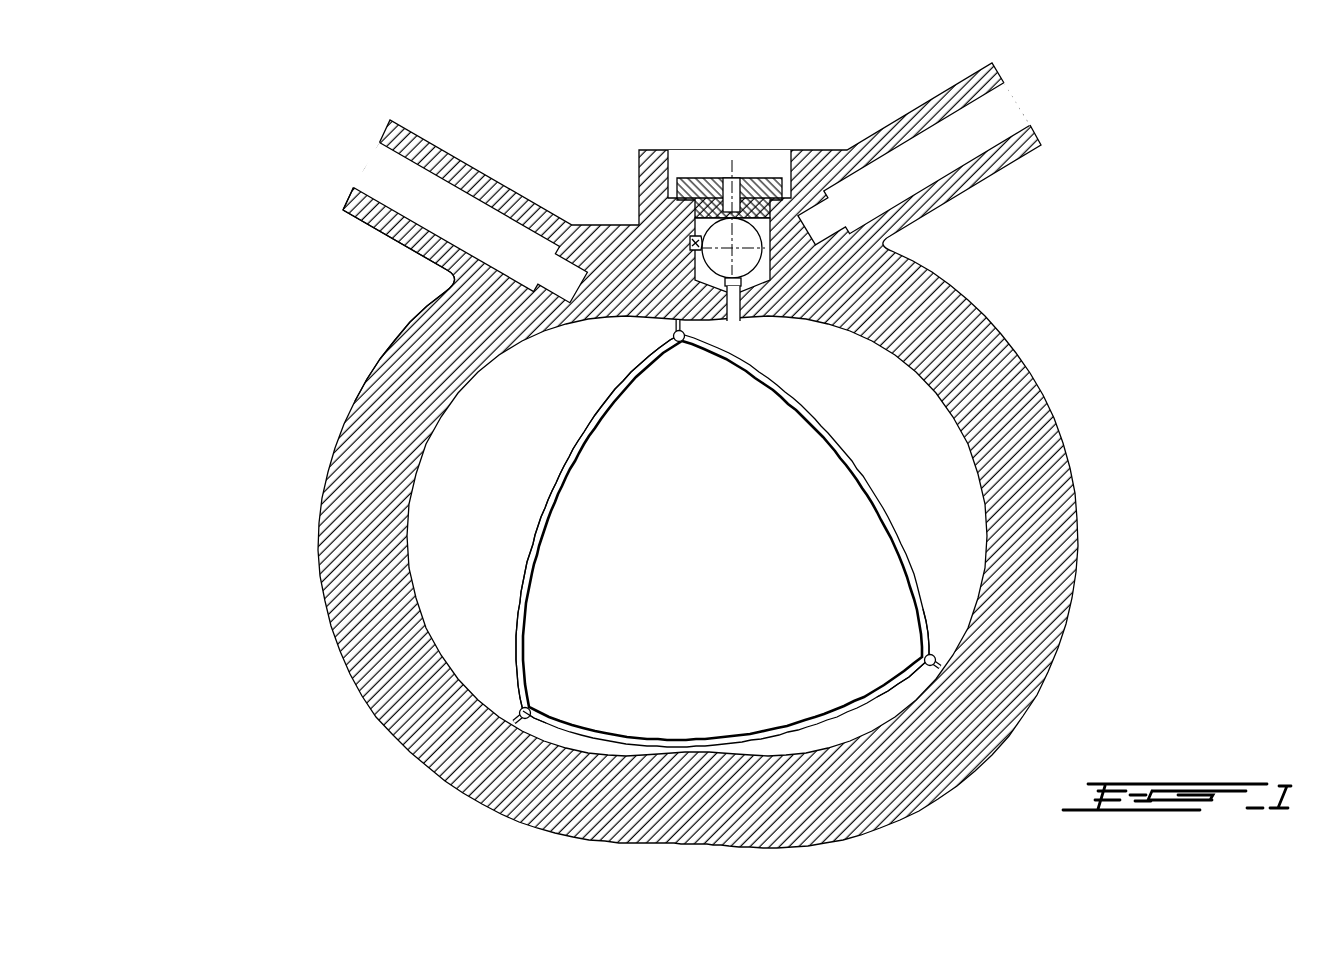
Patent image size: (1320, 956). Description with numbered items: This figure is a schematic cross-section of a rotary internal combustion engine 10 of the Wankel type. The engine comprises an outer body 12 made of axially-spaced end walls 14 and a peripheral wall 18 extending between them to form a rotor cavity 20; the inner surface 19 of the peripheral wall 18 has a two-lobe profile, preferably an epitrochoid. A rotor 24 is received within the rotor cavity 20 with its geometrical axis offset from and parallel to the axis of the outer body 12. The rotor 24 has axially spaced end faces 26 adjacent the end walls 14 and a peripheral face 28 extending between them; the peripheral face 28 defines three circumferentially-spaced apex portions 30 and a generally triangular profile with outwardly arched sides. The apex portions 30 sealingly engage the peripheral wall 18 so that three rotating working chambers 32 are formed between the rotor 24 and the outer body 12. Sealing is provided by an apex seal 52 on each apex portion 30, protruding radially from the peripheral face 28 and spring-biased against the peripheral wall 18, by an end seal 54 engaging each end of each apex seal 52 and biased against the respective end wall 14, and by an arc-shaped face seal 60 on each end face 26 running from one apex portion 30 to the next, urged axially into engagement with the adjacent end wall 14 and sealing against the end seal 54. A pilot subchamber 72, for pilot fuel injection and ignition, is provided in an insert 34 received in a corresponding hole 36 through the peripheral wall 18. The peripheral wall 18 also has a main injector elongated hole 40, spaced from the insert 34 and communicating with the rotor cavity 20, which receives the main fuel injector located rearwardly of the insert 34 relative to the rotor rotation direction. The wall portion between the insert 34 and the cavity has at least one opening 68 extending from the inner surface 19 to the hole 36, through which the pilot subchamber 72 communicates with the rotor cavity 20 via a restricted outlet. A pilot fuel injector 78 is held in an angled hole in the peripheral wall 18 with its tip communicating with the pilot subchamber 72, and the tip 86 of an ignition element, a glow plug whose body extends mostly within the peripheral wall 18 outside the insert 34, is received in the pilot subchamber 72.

The rotary internal combustion engine 10 is at (638, 442).
The outer body 12 is at (700, 442).
The end walls 14 is at (920, 465).
The peripheral wall 18 is at (375, 520).
The inner surface 19 is at (443, 418).
The rotor cavity 20 is at (707, 571).
The rotor 24 is at (937, 588).
The end faces 26 is at (860, 643).
The peripheral face 28 is at (518, 602).
The apex portions 30 is at (956, 680).
The working chambers 32 is at (461, 480).
The insert 34 is at (802, 201).
The hole 36 is at (762, 202).
The main injector elongated hole 40 is at (388, 165).
The apex seal 52 is at (518, 720).
The end seal 54 is at (520, 728).
The face seal 60 is at (813, 413).
The opening 68 is at (736, 320).
The pilot subchamber 72 is at (720, 238).
The pilot fuel injector 78 is at (950, 128).
The tip 86 is at (690, 245).